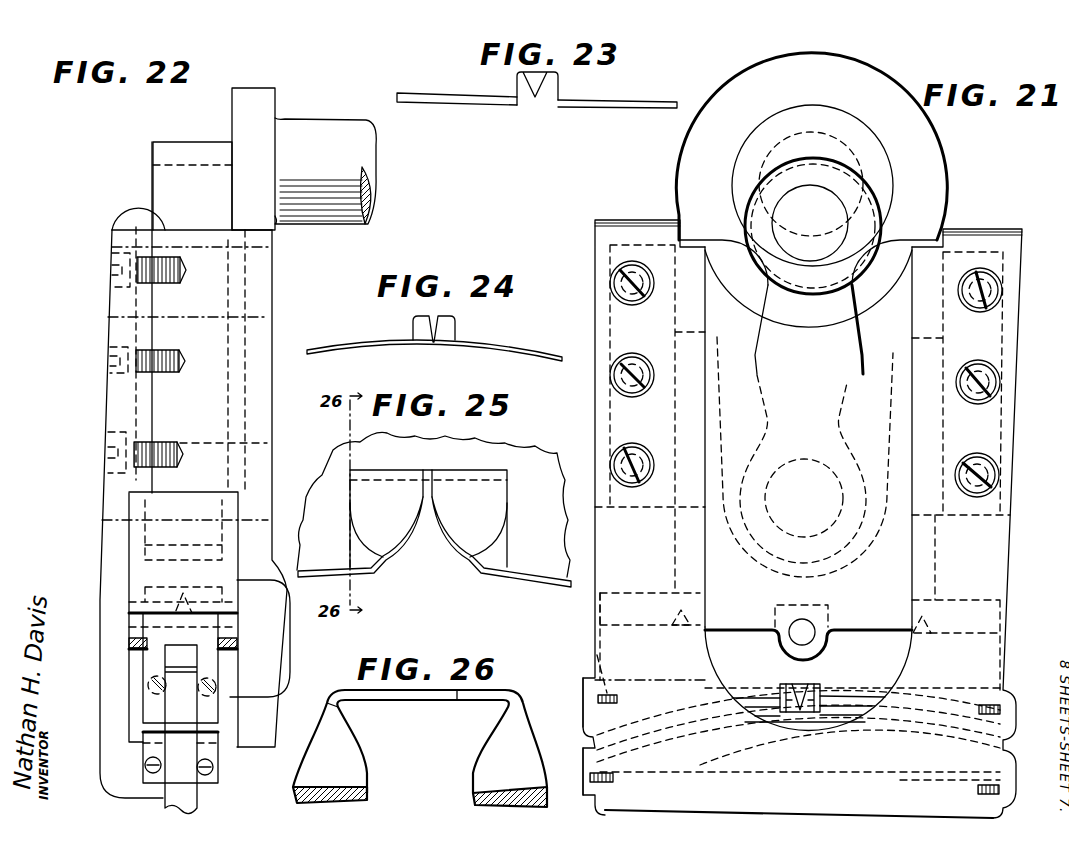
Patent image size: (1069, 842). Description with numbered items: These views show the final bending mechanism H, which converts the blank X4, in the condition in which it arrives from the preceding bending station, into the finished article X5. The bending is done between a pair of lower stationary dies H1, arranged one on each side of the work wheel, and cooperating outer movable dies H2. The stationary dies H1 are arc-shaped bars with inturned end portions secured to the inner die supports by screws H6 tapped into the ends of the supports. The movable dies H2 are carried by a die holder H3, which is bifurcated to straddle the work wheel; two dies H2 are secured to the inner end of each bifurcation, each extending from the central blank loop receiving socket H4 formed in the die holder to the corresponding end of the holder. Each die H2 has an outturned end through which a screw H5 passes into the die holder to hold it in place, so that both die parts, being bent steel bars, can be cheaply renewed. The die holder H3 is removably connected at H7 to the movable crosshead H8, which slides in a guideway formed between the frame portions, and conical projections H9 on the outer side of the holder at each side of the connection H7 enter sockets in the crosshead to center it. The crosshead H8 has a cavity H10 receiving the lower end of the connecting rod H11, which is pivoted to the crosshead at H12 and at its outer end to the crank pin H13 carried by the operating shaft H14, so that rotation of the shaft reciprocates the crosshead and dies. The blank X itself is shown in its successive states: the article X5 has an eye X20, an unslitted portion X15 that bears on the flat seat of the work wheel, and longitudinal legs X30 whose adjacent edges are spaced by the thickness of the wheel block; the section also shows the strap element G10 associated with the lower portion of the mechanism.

In FIG. 22, the final bending mechanism H is at (177, 470).
In FIG. 21, the final bending mechanism H is at (802, 519).
In FIG. 22, the lower stationary dies H1 is at (110, 722).
In FIG. 21, the lower stationary dies H1 is at (805, 724).
In FIG. 22, the outer movable dies H2 is at (108, 360).
In FIG. 21, the outer movable dies H2 is at (583, 713).
In FIG. 22, the die holder H3 is at (150, 653).
In FIG. 21, the die holder H3 is at (623, 625).
In FIG. 21, the blank loop receiving socket H4 is at (780, 688).
In FIG. 21, the screw H5 is at (597, 655).
In FIG. 21, the screws H6 is at (593, 793).
In FIG. 22, the connection H7 is at (228, 633).
In FIG. 21, the connection H7 is at (813, 622).
In FIG. 22, the movable crosshead H8 is at (240, 473).
In FIG. 21, the movable crosshead H8 is at (705, 537).
In FIG. 21, the conical projections H9 is at (672, 617).
In FIG. 22, the cavity H10 is at (225, 405).
In FIG. 21, the cavity H10 is at (728, 408).
In FIG. 22, the connecting rod H11 is at (153, 177).
In FIG. 21, the connecting rod H11 is at (838, 382).
In FIG. 21, the pivotal connection H12 is at (815, 460).
In FIG. 22, the crank pin H13 is at (168, 163).
In FIG. 21, the crank pin H13 is at (850, 213).
In FIG. 22, the operating shaft H14 is at (304, 159).
In FIG. 21, the operating shaft H14 is at (865, 168).
In FIG. 22, the blank X is at (117, 385).
In FIG. 23, the blank X4 is at (517, 74).
In FIG. 24, the finished article X5 is at (385, 348).
In FIG. 25, the finished article X5 is at (400, 523).
In FIG. 26, the finished article X5 is at (340, 728).
In FIG. 26, the unslitted portion X15 is at (457, 700).
In FIG. 26, the eye X20 is at (420, 741).
In FIG. 26, the longitudinal legs X30 is at (473, 803).
In FIG. 21, the strap G10 is at (798, 747).